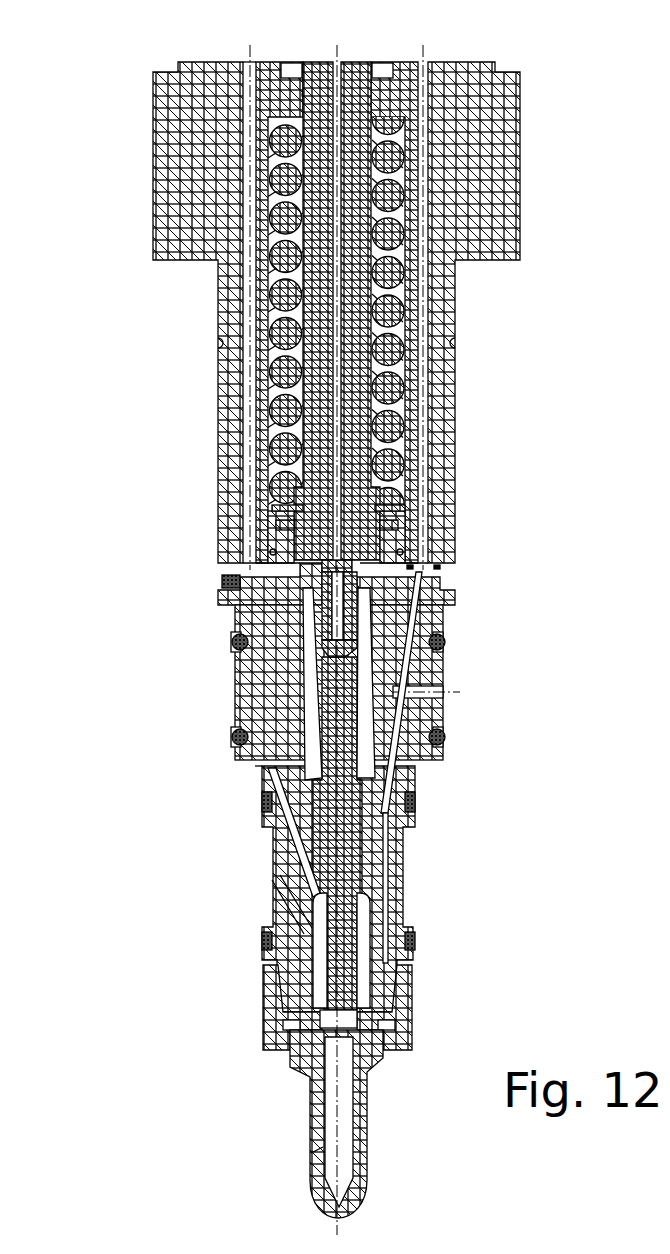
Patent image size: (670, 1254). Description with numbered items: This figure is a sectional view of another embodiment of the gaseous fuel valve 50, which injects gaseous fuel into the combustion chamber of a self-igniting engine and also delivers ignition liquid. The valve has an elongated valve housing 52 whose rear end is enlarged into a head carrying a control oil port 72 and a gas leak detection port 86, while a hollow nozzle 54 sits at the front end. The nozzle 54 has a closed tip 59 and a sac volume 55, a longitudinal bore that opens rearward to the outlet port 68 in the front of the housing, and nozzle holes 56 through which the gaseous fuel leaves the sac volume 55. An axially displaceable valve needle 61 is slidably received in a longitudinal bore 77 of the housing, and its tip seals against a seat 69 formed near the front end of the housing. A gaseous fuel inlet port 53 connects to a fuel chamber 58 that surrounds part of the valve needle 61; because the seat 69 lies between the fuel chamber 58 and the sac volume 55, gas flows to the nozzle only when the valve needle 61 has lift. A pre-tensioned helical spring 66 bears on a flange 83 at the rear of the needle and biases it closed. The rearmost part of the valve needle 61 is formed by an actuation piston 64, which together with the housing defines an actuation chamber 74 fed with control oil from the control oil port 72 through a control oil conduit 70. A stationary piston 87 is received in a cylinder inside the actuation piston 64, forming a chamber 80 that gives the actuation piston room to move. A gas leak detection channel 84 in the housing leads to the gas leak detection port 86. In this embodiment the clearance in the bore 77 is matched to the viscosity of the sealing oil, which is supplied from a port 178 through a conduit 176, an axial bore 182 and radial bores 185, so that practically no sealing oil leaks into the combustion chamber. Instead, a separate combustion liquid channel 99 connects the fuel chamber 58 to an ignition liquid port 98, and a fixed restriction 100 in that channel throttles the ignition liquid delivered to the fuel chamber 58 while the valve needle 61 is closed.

The fuel valve 50 is at (118, 356).
The elongated valve housing 52 is at (225, 388).
The gaseous fuel inlet port 53 is at (285, 895).
The nozzle 54 is at (315, 1105).
The sac volume 55 is at (345, 1120).
The nozzle holes 56 is at (314, 1150).
The fuel chamber 58 is at (365, 920).
The tip 59 is at (366, 312).
The valve needle 61 is at (320, 707).
The actuation piston 64 is at (440, 567).
The helical spring 66 is at (398, 313).
The outlet port 68 is at (350, 1020).
The seat 69 is at (290, 1014).
The control oil conduit 70 is at (245, 292).
The control oil port 72 is at (245, 62).
The actuation chamber 74 is at (345, 580).
The longitudinal bore 77 is at (320, 685).
The chamber 80 is at (290, 560).
The flange 83 is at (278, 522).
The gas leak detection channel 84 is at (395, 768).
The gas leak detection port 86 is at (428, 62).
The stationary piston 87 is at (365, 517).
The ignition liquid port 98 is at (262, 800).
The combustion liquid channel 99 is at (290, 838).
The fixed restriction 100 is at (268, 763).
The conduit 176 is at (340, 368).
The port 178 is at (337, 62).
The axial bore 182 is at (345, 608).
The radial bores 185 is at (358, 636).